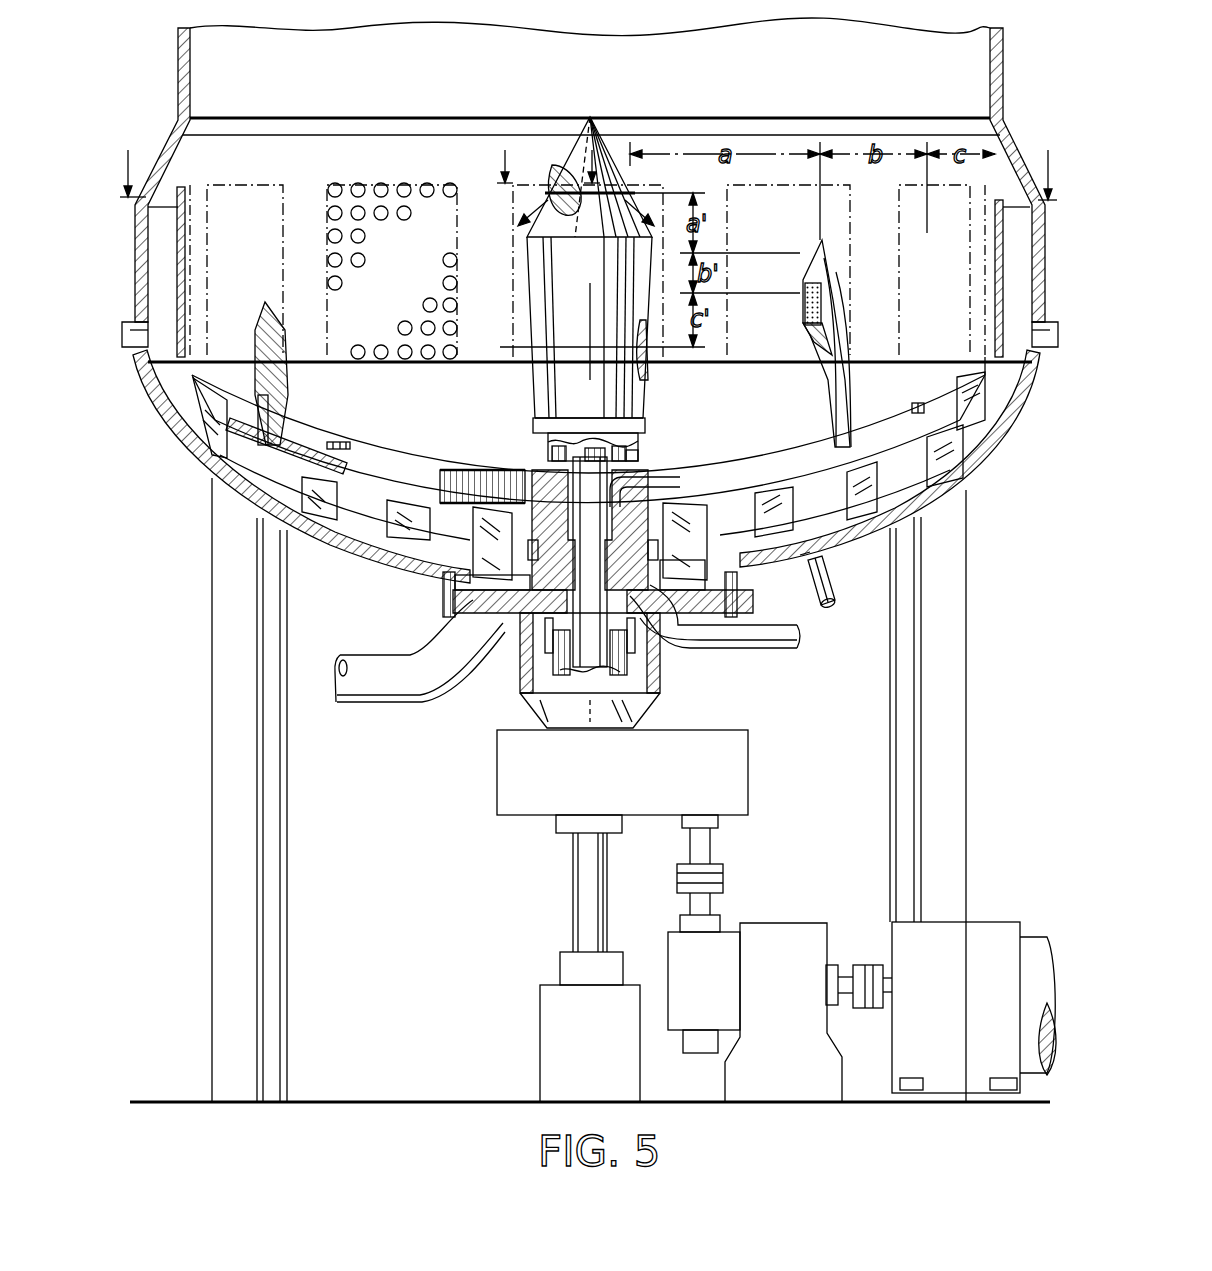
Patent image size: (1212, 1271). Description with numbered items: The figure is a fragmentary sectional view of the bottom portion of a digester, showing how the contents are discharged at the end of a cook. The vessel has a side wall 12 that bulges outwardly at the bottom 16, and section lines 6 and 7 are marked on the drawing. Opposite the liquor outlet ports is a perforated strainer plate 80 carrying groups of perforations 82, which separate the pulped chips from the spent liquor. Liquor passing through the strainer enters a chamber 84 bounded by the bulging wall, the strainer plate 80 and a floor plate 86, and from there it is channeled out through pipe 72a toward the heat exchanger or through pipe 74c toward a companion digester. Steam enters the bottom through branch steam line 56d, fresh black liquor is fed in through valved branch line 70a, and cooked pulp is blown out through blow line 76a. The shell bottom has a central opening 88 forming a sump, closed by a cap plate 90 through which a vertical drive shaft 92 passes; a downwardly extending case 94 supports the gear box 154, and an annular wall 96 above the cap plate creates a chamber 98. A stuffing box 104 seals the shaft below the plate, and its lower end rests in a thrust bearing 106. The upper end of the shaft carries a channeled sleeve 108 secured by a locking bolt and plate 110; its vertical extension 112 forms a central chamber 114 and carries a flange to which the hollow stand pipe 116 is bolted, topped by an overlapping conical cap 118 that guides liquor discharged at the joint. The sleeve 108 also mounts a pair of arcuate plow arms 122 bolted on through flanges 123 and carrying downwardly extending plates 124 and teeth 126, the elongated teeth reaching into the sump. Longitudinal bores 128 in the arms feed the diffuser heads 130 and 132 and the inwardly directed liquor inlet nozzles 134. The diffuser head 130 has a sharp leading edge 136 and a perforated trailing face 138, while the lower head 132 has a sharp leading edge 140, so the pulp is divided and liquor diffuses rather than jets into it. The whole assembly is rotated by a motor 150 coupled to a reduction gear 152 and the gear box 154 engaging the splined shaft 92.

The side wall 12 is at (178, 50).
The bottom 16 is at (312, 528).
The strainer plate 80 is at (458, 158).
The perforations 82 is at (398, 182).
The chamber 84 is at (163, 333).
The floor plate 86 is at (1012, 357).
The central opening 88 is at (683, 582).
The cap plate 90 is at (740, 608).
The vertical drive shaft 92 is at (587, 668).
The case 94 is at (560, 660).
The annular wall 96 is at (446, 580).
The chamber 98 is at (633, 577).
The stuffing box 104 is at (633, 638).
The thrust bearing 106 is at (552, 1040).
The channeled sleeve 108 is at (636, 462).
The plate 110 is at (550, 452).
The vertical extension 112 is at (633, 458).
The central chamber 114 is at (552, 443).
The stand pipe 116 is at (558, 377).
The conical cap 118 is at (597, 124).
The plow arms 122 is at (407, 462).
The flanges 123 is at (492, 507).
The plates 124 is at (208, 437).
The teeth 126 is at (490, 513).
The longitudinal bores 128 is at (273, 447).
The diffuser head 130 is at (835, 393).
The diffuser head 132 is at (285, 377).
The liquor inlet nozzles 134 is at (342, 442).
The leading edge 136 is at (833, 287).
The trailing face 138 is at (803, 300).
The leading edge 140 is at (253, 370).
The motor 150 is at (990, 943).
The reduction gear 152 is at (783, 952).
The gear box 154 is at (717, 768).
The section line 6 is at (588, 175).
The section line 7 is at (548, 166).
The branch steam line 56d is at (833, 580).
The valved branch line 70a is at (777, 647).
The black liquor line 72a is at (136, 395).
The interchange pipe 74c is at (1007, 440).
The blow line 76a is at (370, 707).